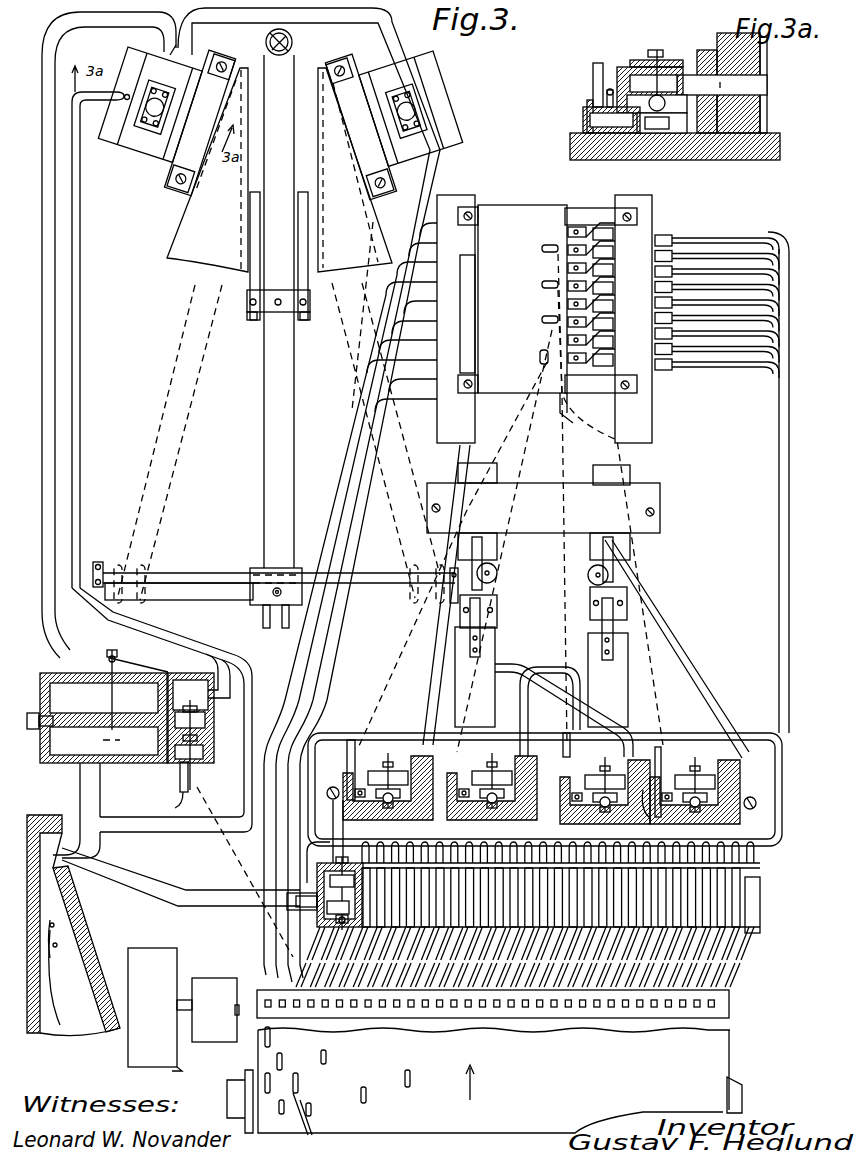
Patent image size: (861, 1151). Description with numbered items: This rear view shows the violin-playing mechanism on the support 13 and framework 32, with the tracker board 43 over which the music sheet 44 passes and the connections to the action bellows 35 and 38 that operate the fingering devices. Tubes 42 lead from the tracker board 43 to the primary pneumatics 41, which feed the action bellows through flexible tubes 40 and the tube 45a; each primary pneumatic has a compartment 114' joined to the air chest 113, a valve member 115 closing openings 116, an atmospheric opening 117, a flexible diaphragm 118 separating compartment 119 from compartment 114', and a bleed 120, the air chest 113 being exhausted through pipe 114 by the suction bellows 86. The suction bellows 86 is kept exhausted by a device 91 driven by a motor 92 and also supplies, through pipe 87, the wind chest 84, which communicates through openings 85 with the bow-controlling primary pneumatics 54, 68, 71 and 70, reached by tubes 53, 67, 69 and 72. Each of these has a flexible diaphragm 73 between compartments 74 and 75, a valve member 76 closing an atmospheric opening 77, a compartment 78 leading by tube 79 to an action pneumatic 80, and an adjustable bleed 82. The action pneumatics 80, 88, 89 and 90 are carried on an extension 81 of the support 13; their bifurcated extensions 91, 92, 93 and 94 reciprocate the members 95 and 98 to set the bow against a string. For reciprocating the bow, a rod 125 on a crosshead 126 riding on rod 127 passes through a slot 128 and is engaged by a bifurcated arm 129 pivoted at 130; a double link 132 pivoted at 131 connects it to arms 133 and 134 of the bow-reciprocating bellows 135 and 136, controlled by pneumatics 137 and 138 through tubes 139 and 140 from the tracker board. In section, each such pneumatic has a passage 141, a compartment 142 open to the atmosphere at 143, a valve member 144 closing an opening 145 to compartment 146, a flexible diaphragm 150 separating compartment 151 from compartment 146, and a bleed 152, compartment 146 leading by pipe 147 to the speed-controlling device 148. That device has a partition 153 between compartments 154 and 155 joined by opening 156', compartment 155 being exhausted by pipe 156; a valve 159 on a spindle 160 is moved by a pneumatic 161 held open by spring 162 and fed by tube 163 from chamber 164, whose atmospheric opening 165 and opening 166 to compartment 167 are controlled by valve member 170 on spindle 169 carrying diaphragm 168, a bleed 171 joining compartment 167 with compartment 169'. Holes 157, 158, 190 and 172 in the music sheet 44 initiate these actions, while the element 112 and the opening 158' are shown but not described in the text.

In FIG. 3A, the support 13 is at (762, 142).
In FIG. 3, the framework 32 is at (492, 207).
In FIG. 3, the action bellows 35 is at (440, 335).
In FIG. 3, the action bellows 38 is at (672, 255).
In FIG. 3, the flexible tube 40 is at (425, 400).
In FIG. 3, the primary pneumatics 41 is at (770, 893).
In FIG. 3, the tubes 42 is at (720, 986).
In FIG. 3, the tracker board 43 is at (730, 1010).
In FIG. 3, the music sheet 44 is at (475, 1115).
In FIG. 3, the tube 45a is at (440, 252).
In FIG. 3, the tube 53 is at (551, 245).
In FIG. 3, the bow-controlling primary pneumatic 54 is at (641, 815).
In FIG. 3, the tube 67 is at (544, 283).
In FIG. 3, the bow-controlling primary pneumatic 68 is at (745, 815).
In FIG. 3, the tube 69 is at (544, 318).
In FIG. 3, the bow-controlling primary pneumatic 70 is at (520, 815).
In FIG. 3, the primary pneumatic 71 is at (426, 815).
In FIG. 3, the tube 72 is at (540, 356).
In FIG. 3, the flexible diaphragm 73 is at (396, 815).
In FIG. 3, the compartment 74 is at (376, 818).
In FIG. 3, the compartment 75 is at (355, 790).
In FIG. 3, the valve member 76 is at (384, 748).
In FIG. 3, the opening 77 is at (392, 760).
In FIG. 3, the compartment 78 is at (435, 740).
In FIG. 3, the tube 79 is at (432, 680).
In FIG. 3, the action pneumatic 80 is at (458, 471).
In FIG. 3, the extension 81 is at (546, 533).
In FIG. 3, the bleed 82 is at (346, 815).
In FIG. 3, the wind chest 84 is at (660, 818).
In FIG. 3, the opening 85 is at (402, 770).
In FIG. 3, the suction bellows 86 is at (55, 889).
In FIG. 3, the pipe 87 is at (183, 833).
In FIG. 3, the action pneumatic 88 is at (630, 475).
In FIG. 3, the action pneumatic 89 is at (628, 690).
In FIG. 3, the action pneumatic 90 is at (495, 707).
In FIG. 3, the device 91 is at (498, 583).
In FIG. 3, the motor 92 is at (612, 582).
In FIG. 3, the bifurcated extension 93 is at (604, 638).
In FIG. 3, the bifurcated extension 94 is at (481, 628).
In FIG. 3, the member 95 is at (497, 610).
In FIG. 3, the member 98 is at (630, 598).
In FIG. 3, the pipe 112 is at (532, 672).
In FIG. 3, the air chest 113 is at (307, 920).
In FIG. 3, the pipe 114 is at (181, 886).
In FIG. 3, the compartment 114' is at (300, 876).
In FIG. 3, the valve member 115 is at (333, 878).
In FIG. 3, the openings 116 is at (356, 882).
In FIG. 3, the opening 117 is at (336, 860).
In FIG. 3, the flexible diaphragm 118 is at (356, 906).
In FIG. 3, the compartment 119 is at (348, 920).
In FIG. 3, the bleed 120 is at (340, 932).
In FIG. 3, the rod 125 is at (279, 588).
In FIG. 3, the crosshead 126 is at (255, 603).
In FIG. 3, the rod 127 is at (205, 573).
In FIG. 3, the slot 128 is at (378, 595).
In FIG. 3, the bifurcated arm 129 is at (294, 400).
In FIG. 3, the pivot 130 is at (293, 43).
In FIG. 3, the pivot 131 is at (265, 315).
In FIG. 3, the double link 132 is at (293, 313).
In FIG. 3, the arm 133 is at (308, 285).
In FIG. 3, the arm 134 is at (250, 283).
In FIG. 3, the bow-reciprocating bellows 135 is at (372, 262).
In FIG. 3, the bow-reciprocating bellows 136 is at (185, 262).
In FIG. 3A, the bow-reciprocating bellows 136 is at (765, 115).
In FIG. 3, the pneumatic 137 is at (403, 165).
In FIG. 3, the pneumatic 138 is at (150, 158).
In FIG. 3A, the pneumatic 138 is at (622, 67).
In FIG. 3, the tube 139 is at (435, 164).
In FIG. 3, the tube 140 is at (79, 290).
In FIG. 3A, the tube 140 is at (587, 105).
In FIG. 3A, the passage 141 is at (752, 85).
In FIG. 3A, the compartment 142 is at (703, 50).
In FIG. 3, the opening 143 is at (135, 125).
In FIG. 3A, the opening 143 is at (648, 62).
In FIG. 3A, the valve member 144 is at (661, 78).
In FIG. 3A, the opening 145 is at (597, 75).
In FIG. 3A, the compartment 146 is at (688, 112).
In FIG. 3, the pipe 147 is at (178, 47).
In FIG. 3, the device 148 is at (92, 707).
In FIG. 3A, the flexible diaphragm 150 is at (660, 128).
In FIG. 3A, the compartment 151 is at (645, 130).
In FIG. 3A, the bleed 152 is at (590, 115).
In FIG. 3, the partition 153 is at (104, 741).
In FIG. 3, the compartment 154 is at (104, 698).
In FIG. 3, the compartment 155 is at (108, 766).
In FIG. 3, the pipe 156 is at (74, 810).
In FIG. 3, the opening 156' is at (33, 705).
In FIG. 3, the opening 157 is at (270, 1038).
In FIG. 3, the opening 158 is at (301, 1059).
In FIG. 3, the slot 158' is at (236, 1083).
In FIG. 3, the valve 159 is at (118, 740).
In FIG. 3, the spindle 160 is at (114, 696).
In FIG. 3, the pneumatic 161 is at (140, 663).
In FIG. 3, the spring 162 is at (110, 655).
In FIG. 3, the tube 163 is at (192, 676).
In FIG. 3, the chamber 164 is at (206, 728).
In FIG. 3, the opening 165 is at (201, 700).
In FIG. 3, the opening 166 is at (205, 748).
In FIG. 3, the compartment 167 is at (205, 762).
In FIG. 3, the flexible diaphragm 168 is at (196, 776).
In FIG. 3, the spindle 169 is at (175, 804).
In FIG. 3, the compartment 169' is at (244, 872).
In FIG. 3, the valve member 170 is at (185, 738).
In FIG. 3, the bleed 171 is at (176, 762).
In FIG. 3, the openings 172 is at (311, 1122).
In FIG. 3, the opening 190 is at (344, 1079).